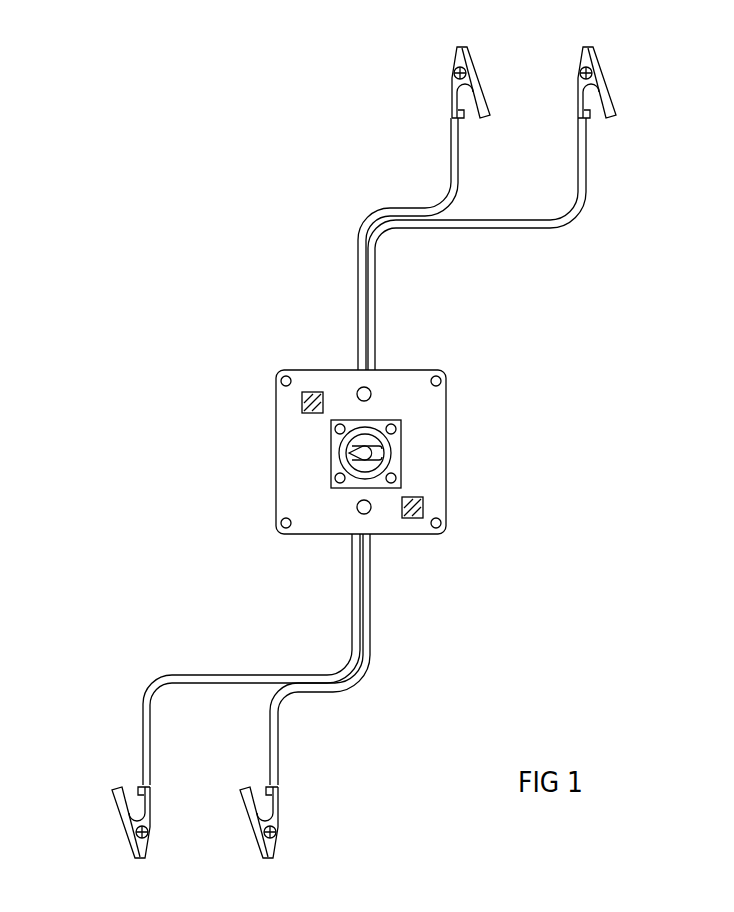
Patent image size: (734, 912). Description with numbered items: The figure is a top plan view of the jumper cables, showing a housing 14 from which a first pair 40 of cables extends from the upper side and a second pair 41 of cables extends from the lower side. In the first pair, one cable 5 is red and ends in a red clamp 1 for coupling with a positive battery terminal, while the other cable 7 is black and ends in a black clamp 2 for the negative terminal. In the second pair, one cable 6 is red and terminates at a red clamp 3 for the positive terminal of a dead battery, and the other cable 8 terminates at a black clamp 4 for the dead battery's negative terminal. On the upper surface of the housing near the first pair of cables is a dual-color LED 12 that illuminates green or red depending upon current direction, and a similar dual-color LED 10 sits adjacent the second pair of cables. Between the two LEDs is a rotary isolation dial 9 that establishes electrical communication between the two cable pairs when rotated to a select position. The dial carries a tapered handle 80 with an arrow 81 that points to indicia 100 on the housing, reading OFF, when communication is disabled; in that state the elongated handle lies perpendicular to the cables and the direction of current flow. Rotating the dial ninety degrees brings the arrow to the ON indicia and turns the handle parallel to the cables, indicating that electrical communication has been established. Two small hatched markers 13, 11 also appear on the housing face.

The red clamp 1 is at (613, 60).
The black clamp 2 is at (491, 51).
The red clamp 3 is at (289, 848).
The black clamp 4 is at (119, 845).
The red cable 5 is at (596, 163).
The red cable 6 is at (289, 753).
The black cable 7 is at (438, 158).
The cable 8 is at (133, 748).
The rotary isolation dial 9 is at (413, 466).
The dual-color LED 10 is at (376, 520).
The indicator light 11 is at (433, 506).
The dual-color LED 12 is at (353, 378).
The indicator light 13 is at (290, 405).
The housing panel 14 is at (266, 470).
The first pair of cables 40 is at (389, 310).
The second pair of cables 41 is at (340, 583).
The tapered handle 80 is at (396, 450).
The arrow 81 is at (338, 467).
The indicia 100 is at (288, 448).